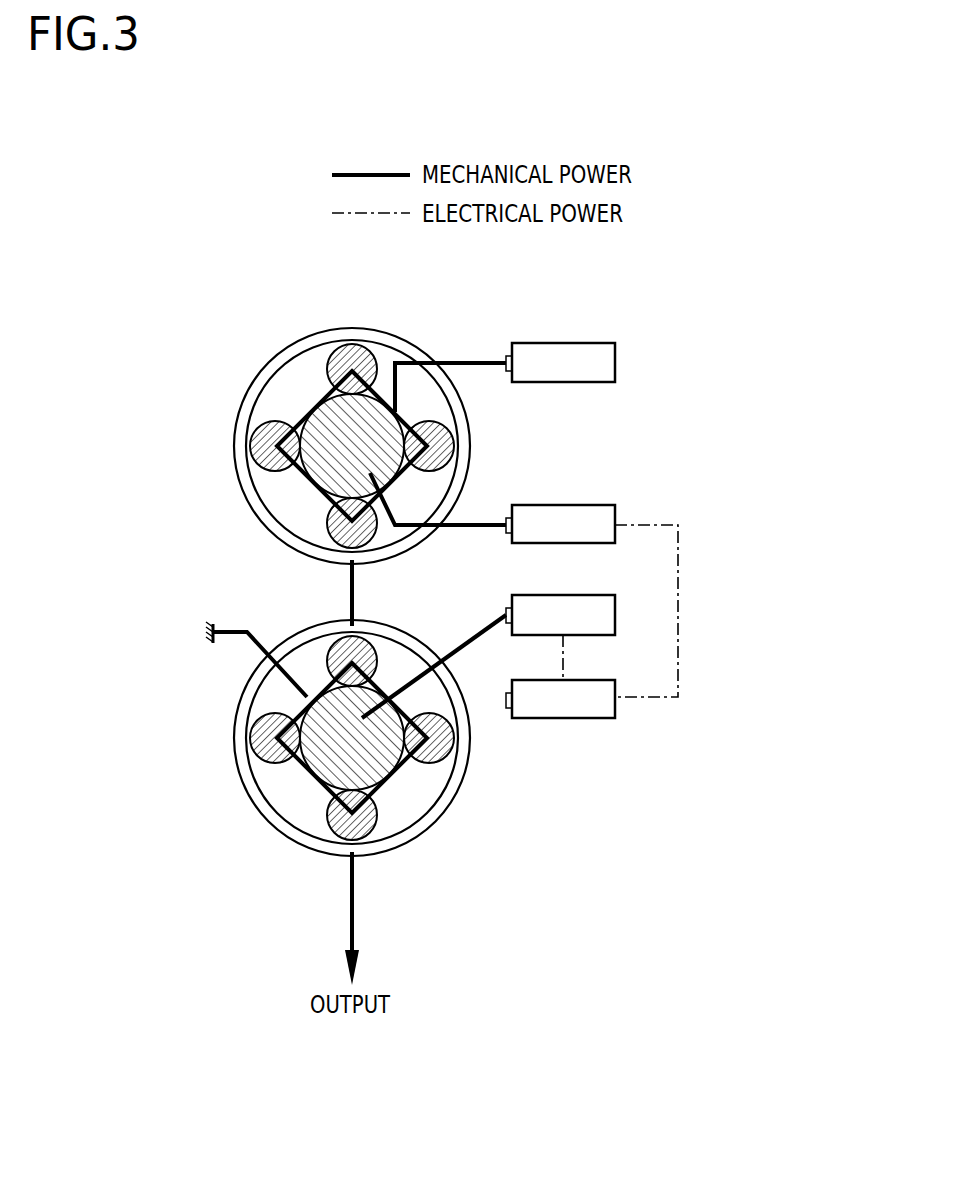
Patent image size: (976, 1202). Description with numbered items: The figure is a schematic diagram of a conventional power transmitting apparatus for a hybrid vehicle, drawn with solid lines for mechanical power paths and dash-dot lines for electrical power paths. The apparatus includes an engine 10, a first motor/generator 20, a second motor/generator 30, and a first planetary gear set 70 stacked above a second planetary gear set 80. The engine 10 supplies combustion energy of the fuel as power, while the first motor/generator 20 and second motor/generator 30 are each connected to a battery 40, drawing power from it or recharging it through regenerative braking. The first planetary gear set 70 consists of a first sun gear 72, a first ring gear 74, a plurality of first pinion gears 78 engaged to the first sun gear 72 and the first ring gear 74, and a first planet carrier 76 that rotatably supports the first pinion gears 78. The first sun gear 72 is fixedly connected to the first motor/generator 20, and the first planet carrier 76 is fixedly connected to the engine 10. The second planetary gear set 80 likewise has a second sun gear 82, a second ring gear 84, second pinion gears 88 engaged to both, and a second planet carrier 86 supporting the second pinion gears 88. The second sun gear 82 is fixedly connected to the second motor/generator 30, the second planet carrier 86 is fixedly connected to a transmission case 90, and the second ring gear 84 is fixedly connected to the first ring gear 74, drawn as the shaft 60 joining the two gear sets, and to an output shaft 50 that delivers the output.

The engine 10 is at (616, 363).
The first motor/generator 20 is at (617, 510).
The second motor/generator 30 is at (617, 613).
The battery 40 is at (615, 717).
The output shaft 50 is at (349, 923).
The connecting shaft 60 is at (358, 608).
The first planetary gear set 70 is at (323, 431).
The first sun gear 72 is at (312, 470).
The first ring gear 74 is at (245, 480).
The first planet carrier 76 is at (298, 415).
The first pinion gears 78 is at (334, 546).
The second planetary gear set 80 is at (338, 756).
The second sun gear 82 is at (312, 760).
The second ring gear 84 is at (245, 770).
The second planet carrier 86 is at (302, 705).
The second pinion gears 88 is at (334, 838).
The transmission case 90 is at (212, 624).